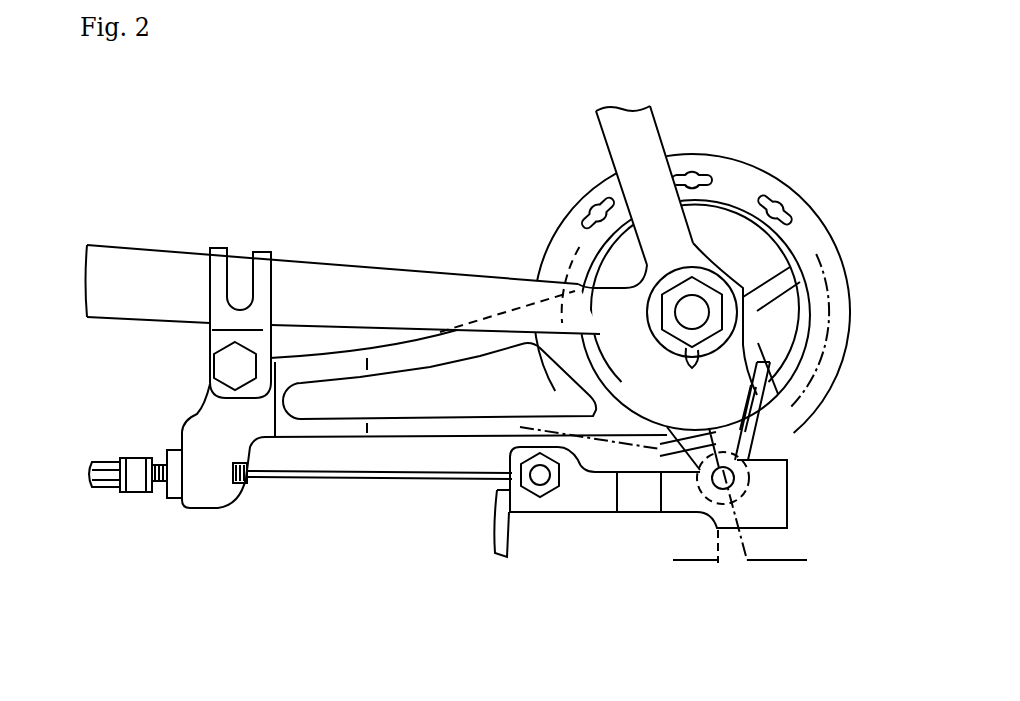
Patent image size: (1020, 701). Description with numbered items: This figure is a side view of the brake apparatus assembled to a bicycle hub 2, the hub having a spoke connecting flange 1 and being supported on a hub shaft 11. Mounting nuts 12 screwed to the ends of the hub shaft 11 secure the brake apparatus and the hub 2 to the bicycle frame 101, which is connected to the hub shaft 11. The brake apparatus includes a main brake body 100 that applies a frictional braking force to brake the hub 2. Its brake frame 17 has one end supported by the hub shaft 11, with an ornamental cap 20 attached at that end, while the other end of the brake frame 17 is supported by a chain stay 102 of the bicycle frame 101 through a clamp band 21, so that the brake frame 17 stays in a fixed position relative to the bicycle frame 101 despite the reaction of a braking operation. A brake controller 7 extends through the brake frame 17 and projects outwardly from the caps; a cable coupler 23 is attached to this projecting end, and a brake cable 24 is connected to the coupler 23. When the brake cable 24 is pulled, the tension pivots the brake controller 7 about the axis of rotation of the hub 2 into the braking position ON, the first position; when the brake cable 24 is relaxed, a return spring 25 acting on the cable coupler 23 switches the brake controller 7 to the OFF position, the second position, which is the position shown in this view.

The spoke connecting flange 1 is at (711, 157).
The bicycle hub 2 is at (736, 198).
The ornamental cap 20 is at (742, 255).
The mounting nuts 12 is at (670, 348).
The hub shaft 11 is at (697, 322).
The bicycle frame 101 is at (612, 133).
The chain stay 102 is at (303, 270).
The main brake body 100 is at (612, 259).
The clamp band 21 is at (220, 248).
The brake frame 17 is at (413, 405).
The brake cable 24 is at (317, 478).
The cable coupler 23 is at (523, 500).
The brake controller 7 is at (713, 463).
The return spring 25 is at (748, 447).